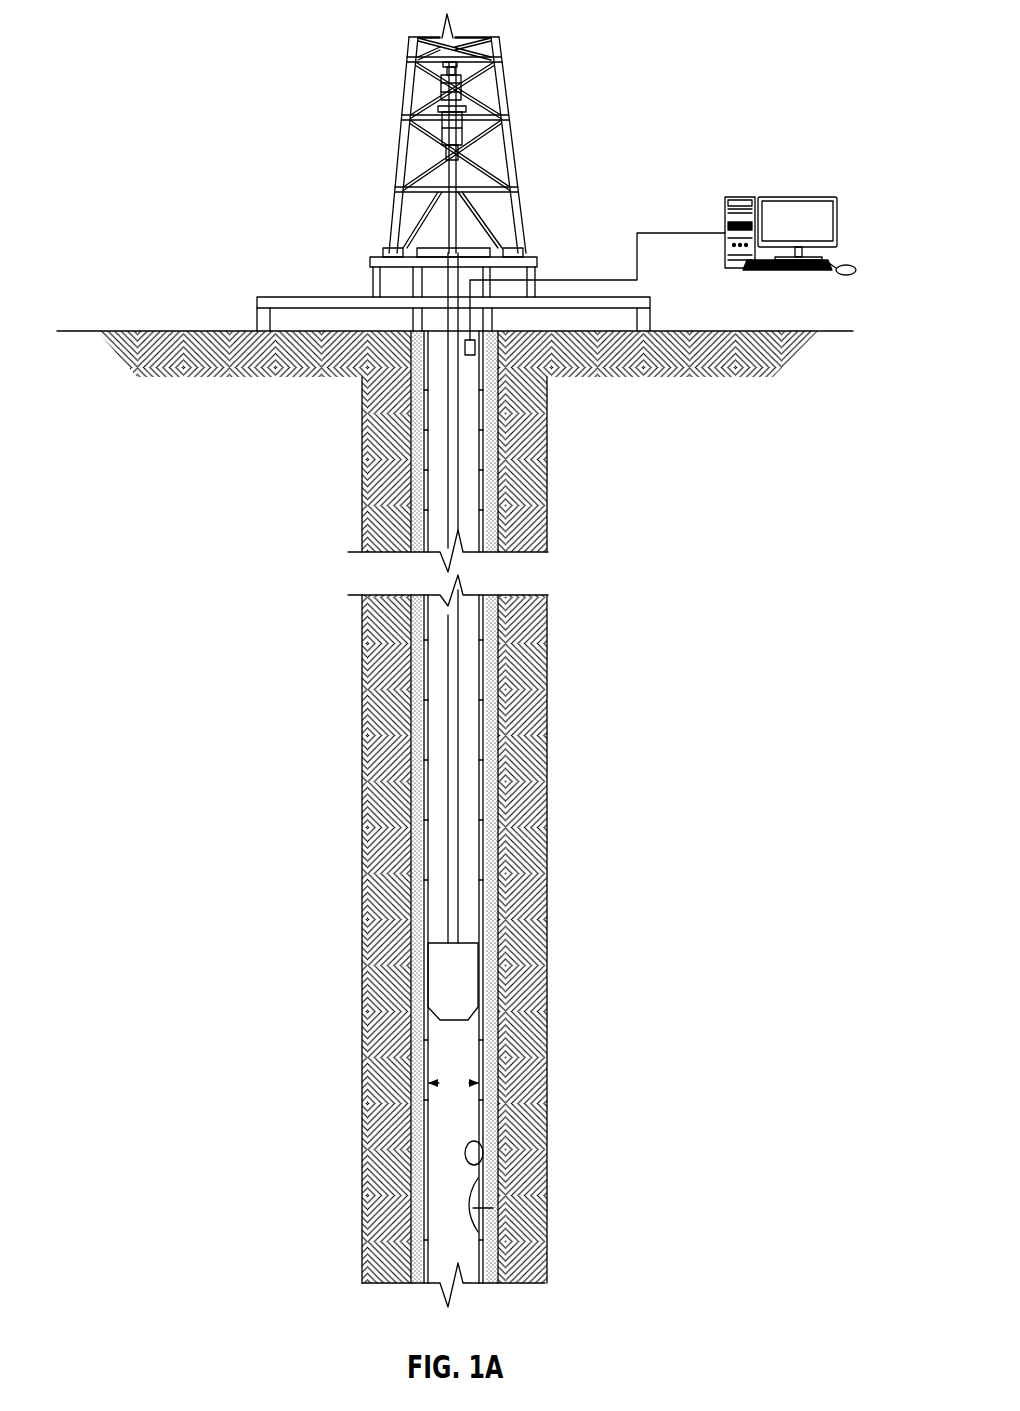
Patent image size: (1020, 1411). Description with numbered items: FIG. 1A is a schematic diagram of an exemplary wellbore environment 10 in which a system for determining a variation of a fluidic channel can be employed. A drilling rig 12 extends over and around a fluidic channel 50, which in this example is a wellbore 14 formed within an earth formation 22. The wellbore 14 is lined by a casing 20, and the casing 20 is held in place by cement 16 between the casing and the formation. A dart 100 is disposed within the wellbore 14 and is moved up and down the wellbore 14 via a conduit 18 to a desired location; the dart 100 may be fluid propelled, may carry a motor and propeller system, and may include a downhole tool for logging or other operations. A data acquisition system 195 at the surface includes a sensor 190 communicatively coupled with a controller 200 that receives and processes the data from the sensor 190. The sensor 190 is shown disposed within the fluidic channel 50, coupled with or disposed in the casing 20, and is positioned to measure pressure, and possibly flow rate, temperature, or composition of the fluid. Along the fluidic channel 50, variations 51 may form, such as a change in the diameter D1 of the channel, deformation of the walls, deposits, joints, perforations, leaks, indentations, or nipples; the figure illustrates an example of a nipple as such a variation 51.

The wellbore environment 10 is at (675, 40).
The drilling rig 12 is at (393, 162).
The wellbore 14 is at (455, 819).
The fluidic channel 50 is at (465, 689).
The cement 16 is at (492, 737).
The conduit 18 is at (460, 780).
The casing 20 is at (483, 1150).
The earth formation 22 is at (497, 1197).
The variations 51 is at (497, 1213).
The dart 100 is at (465, 978).
The diameter D1 is at (453, 1083).
The sensor 190 is at (476, 347).
The data acquisition system 195 is at (812, 196).
The controller 200 is at (798, 197).